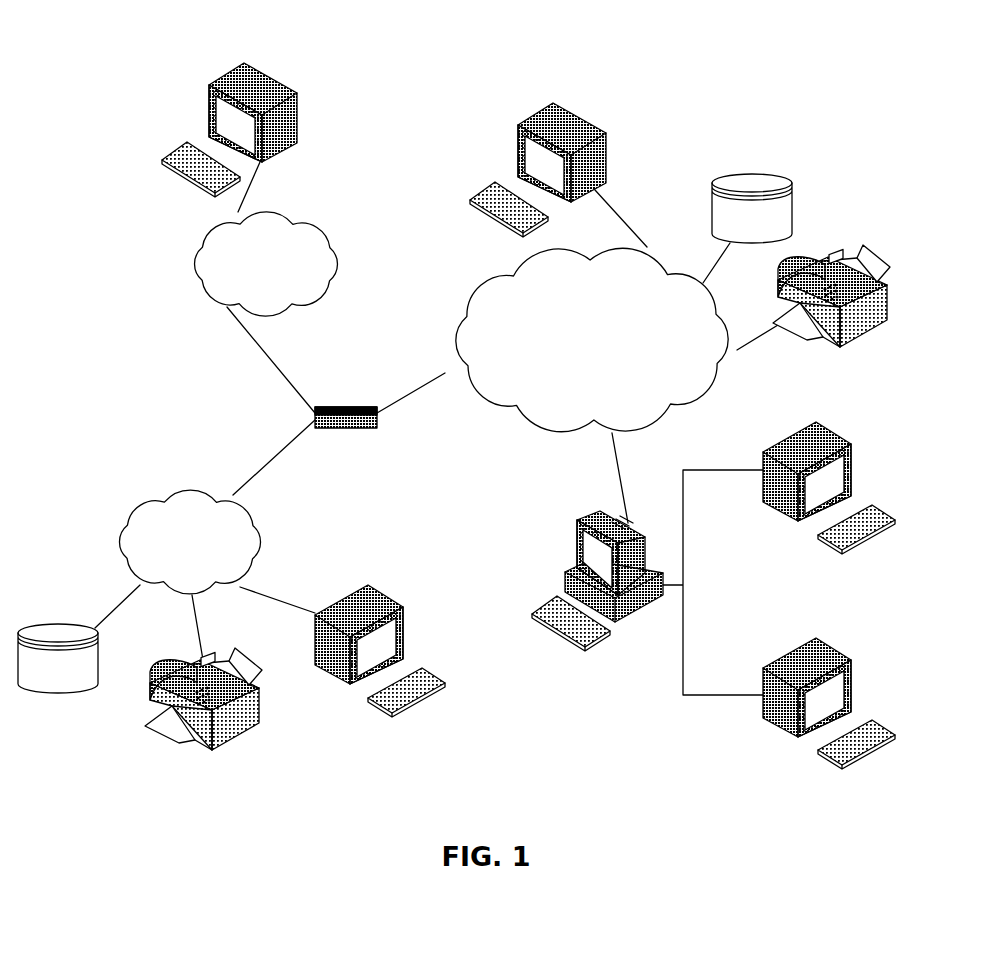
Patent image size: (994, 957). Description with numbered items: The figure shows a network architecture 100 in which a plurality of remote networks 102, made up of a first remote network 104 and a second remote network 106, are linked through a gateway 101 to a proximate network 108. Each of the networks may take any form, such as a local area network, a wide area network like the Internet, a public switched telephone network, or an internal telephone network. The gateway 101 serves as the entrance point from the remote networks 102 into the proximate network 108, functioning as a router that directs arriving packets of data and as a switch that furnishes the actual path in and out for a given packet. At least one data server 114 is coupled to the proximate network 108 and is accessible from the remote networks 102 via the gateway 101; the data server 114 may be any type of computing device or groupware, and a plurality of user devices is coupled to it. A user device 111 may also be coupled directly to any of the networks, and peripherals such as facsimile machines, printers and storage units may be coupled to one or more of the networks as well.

The architecture 100 is at (135, 44).
The gateway 101 is at (323, 407).
The remote networks 102 is at (166, 326).
The first remote network 104 is at (118, 513).
The second remote network 106 is at (338, 232).
The proximate network 108 is at (698, 410).
The user device 111 is at (605, 137).
The data server 114 is at (577, 537).